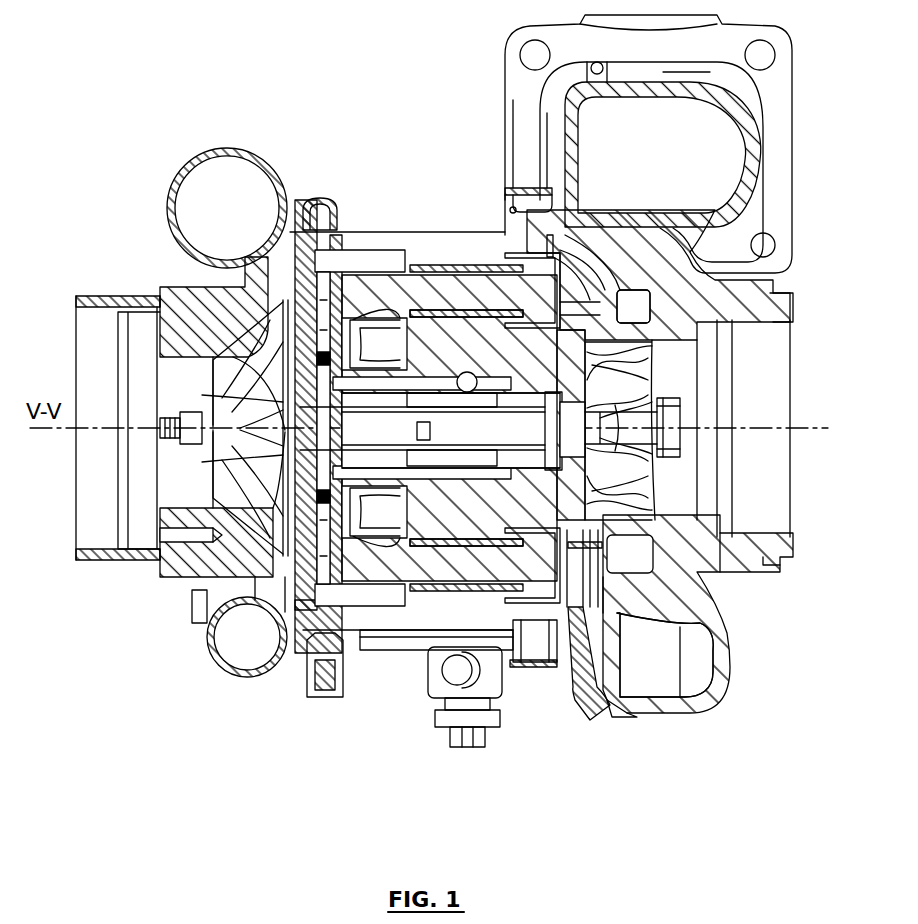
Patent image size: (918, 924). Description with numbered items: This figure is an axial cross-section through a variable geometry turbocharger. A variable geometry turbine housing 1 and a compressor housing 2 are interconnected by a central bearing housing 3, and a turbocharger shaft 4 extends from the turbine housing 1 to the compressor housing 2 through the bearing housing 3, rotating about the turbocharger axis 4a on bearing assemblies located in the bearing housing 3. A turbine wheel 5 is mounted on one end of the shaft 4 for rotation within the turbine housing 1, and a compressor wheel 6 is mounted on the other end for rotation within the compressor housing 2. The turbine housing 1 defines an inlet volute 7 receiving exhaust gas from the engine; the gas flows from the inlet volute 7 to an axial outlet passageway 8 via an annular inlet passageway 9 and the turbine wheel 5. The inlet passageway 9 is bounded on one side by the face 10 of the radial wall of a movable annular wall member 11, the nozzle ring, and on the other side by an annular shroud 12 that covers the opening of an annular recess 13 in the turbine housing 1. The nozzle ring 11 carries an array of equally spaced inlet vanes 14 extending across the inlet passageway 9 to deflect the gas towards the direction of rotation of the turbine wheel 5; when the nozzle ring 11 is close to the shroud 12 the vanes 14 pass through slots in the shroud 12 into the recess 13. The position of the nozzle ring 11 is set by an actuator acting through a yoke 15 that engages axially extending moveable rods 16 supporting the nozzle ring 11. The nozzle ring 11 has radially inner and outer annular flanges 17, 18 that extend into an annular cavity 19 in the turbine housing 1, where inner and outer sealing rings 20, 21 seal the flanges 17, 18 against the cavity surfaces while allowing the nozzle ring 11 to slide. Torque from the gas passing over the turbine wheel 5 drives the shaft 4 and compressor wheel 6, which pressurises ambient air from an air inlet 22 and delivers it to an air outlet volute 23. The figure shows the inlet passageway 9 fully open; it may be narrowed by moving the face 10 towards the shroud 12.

The turbine housing 1 is at (673, 595).
The compressor housing 2 is at (187, 310).
The bearing housing 3 is at (387, 243).
The turbocharger shaft 4 is at (645, 393).
The turbocharger axis 4a is at (803, 428).
The turbine wheel 5 is at (645, 482).
The compressor wheel 6 is at (217, 465).
The inlet volute 7 is at (697, 117).
The axial outlet passageway 8 is at (708, 390).
The annular inlet passageway 9 is at (605, 272).
The face 10 is at (575, 268).
The movable annular wall member (nozzle ring) 11 is at (580, 663).
The annular shroud 12 is at (717, 572).
The annular recess 13 is at (766, 321).
The inlet vanes 14 is at (650, 285).
The yoke 15 is at (323, 520).
The moveable rods 16 is at (453, 287).
The inner annular flange 17 is at (472, 640).
The outer annular flange 18 is at (506, 206).
The annular cavity 19 is at (590, 583).
The inner sealing ring 20 is at (625, 368).
The outer sealing ring 21 is at (552, 236).
The air inlet 22 is at (168, 462).
The air outlet volute 23 is at (213, 183).